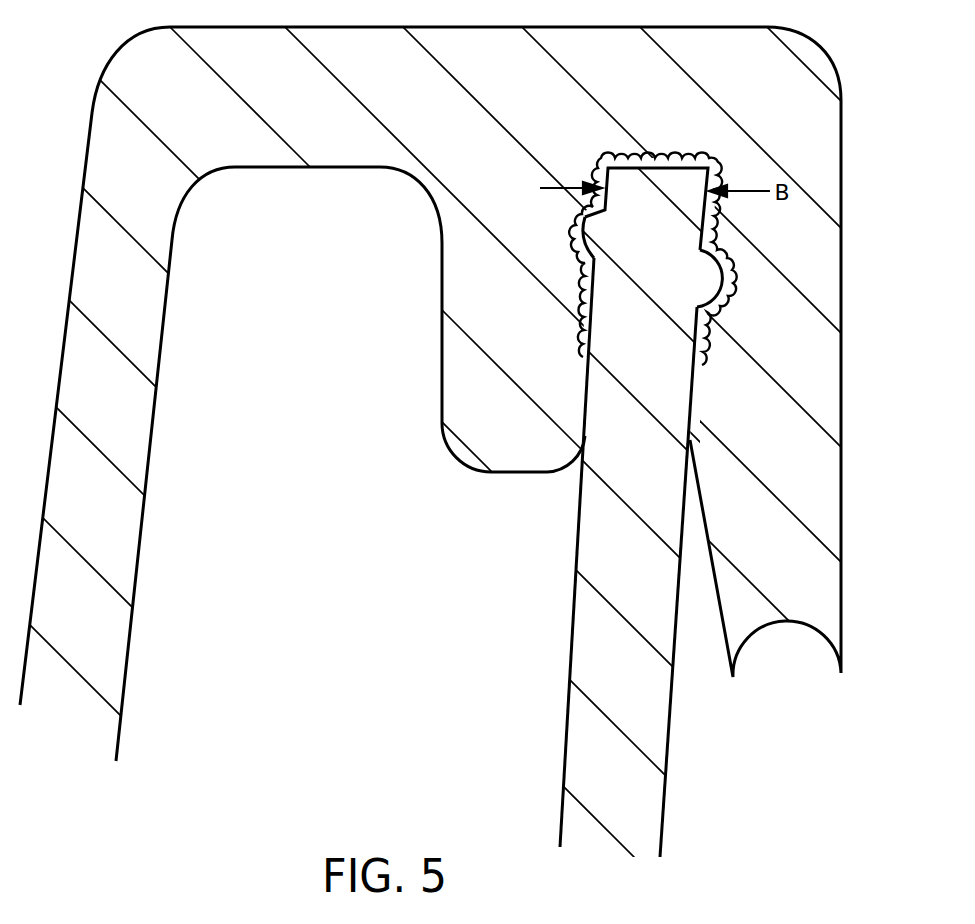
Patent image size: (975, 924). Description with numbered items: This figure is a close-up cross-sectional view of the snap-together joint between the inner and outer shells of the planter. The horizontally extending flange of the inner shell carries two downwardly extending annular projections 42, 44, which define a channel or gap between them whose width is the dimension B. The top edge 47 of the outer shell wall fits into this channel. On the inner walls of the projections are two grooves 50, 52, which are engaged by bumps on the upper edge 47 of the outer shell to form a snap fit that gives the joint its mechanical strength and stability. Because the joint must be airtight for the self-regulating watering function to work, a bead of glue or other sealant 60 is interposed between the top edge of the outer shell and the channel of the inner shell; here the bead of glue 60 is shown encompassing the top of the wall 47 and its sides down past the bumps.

The downwardly extending annular projection 42 is at (466, 467).
The downwardly extending annular projection 44 is at (783, 722).
The top edge of the outer shell 47 is at (669, 726).
The groove 50 is at (586, 230).
The groove 52 is at (717, 277).
The bead of glue or other sealant 60 is at (704, 152).